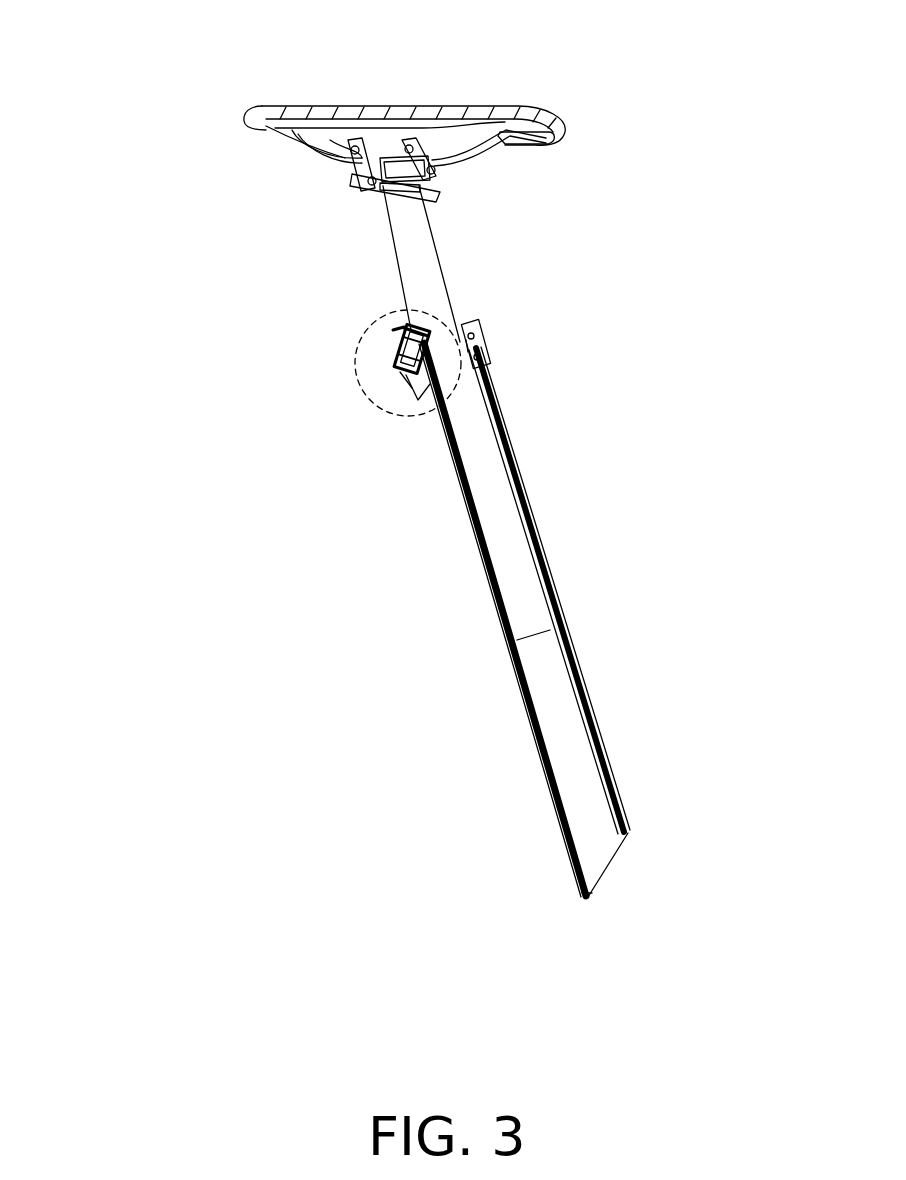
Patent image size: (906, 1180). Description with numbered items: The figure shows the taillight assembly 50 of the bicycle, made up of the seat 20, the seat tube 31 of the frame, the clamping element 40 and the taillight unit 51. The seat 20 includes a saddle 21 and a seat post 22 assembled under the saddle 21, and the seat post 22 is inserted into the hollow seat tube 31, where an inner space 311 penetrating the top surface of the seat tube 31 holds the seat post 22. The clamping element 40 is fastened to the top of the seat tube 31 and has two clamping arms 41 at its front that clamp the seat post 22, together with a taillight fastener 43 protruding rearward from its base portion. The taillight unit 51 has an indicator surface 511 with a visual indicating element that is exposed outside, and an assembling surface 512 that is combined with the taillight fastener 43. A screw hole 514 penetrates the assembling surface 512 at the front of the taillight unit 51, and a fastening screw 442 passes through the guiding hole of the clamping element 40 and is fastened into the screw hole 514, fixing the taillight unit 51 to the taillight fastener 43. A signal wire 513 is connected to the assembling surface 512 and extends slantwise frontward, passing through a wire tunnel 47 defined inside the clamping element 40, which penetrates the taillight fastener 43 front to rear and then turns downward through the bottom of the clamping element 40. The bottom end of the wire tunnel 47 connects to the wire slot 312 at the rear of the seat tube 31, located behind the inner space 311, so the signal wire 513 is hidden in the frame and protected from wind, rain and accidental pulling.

The seat 20 is at (240, 92).
The saddle 21 is at (400, 108).
The seat post 22 is at (428, 243).
The seat tube 31 is at (553, 575).
The inner space 311 is at (557, 733).
The wire slot 312 is at (555, 805).
The clamping element 40 is at (507, 342).
The clamping arms 41 is at (472, 330).
The fastening screw 442 is at (458, 328).
The screw hole 514 is at (498, 424).
The taillight assembly 50 is at (228, 376).
The taillight unit 51 is at (405, 358).
The indicator surface 511 is at (396, 343).
The assembling surface 512 is at (402, 330).
The signal wire 513 is at (452, 467).
The taillight fastener 43 is at (403, 377).
The wire tunnel 47 is at (418, 385).